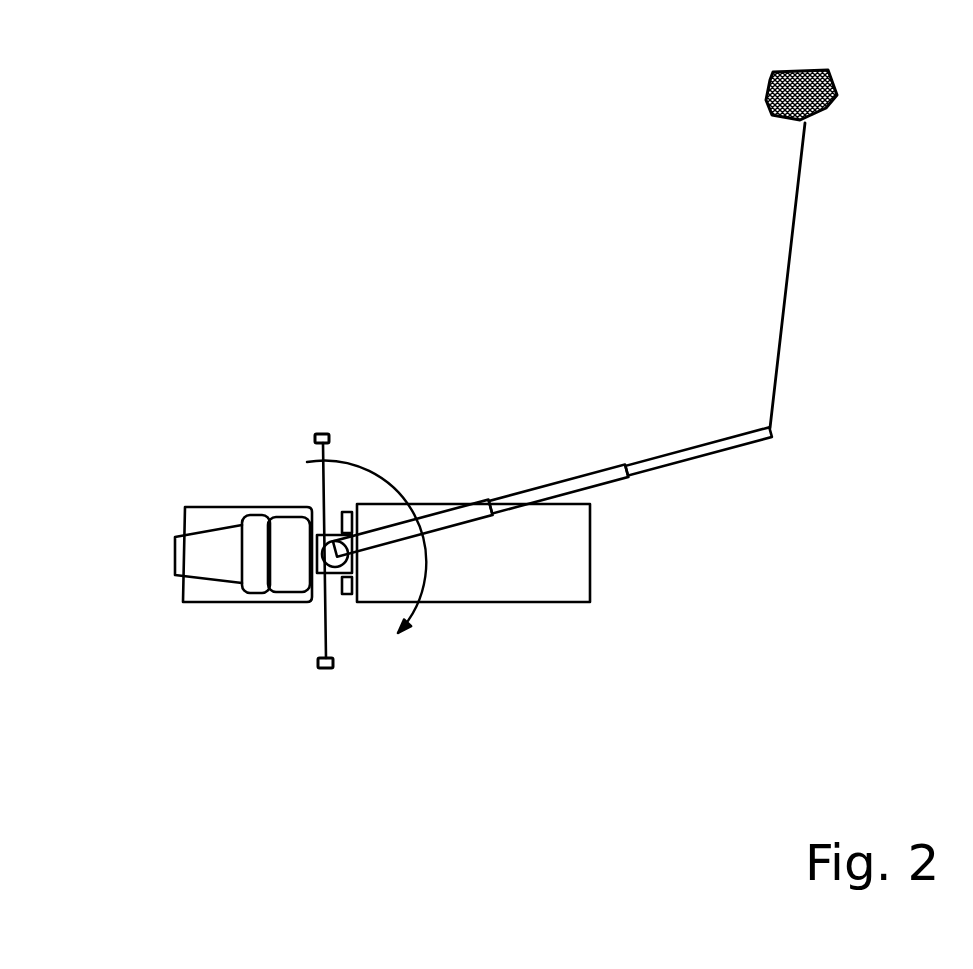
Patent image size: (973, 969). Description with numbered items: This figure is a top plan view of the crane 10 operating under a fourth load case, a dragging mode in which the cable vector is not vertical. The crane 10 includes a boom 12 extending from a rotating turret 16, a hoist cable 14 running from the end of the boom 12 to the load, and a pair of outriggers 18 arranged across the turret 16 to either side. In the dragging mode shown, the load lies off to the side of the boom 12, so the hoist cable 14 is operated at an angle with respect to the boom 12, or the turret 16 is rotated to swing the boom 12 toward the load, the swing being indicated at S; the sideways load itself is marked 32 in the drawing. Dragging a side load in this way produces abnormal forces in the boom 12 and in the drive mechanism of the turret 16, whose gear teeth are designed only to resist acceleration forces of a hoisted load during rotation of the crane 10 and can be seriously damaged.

The crane 10 is at (170, 263).
The boom 12 is at (590, 465).
The hoist cable 14 is at (790, 265).
The rotating turret 16 is at (313, 567).
The outriggers 18 is at (333, 438).
The load / target object 32 is at (770, 80).
The swing direction S is at (773, 353).